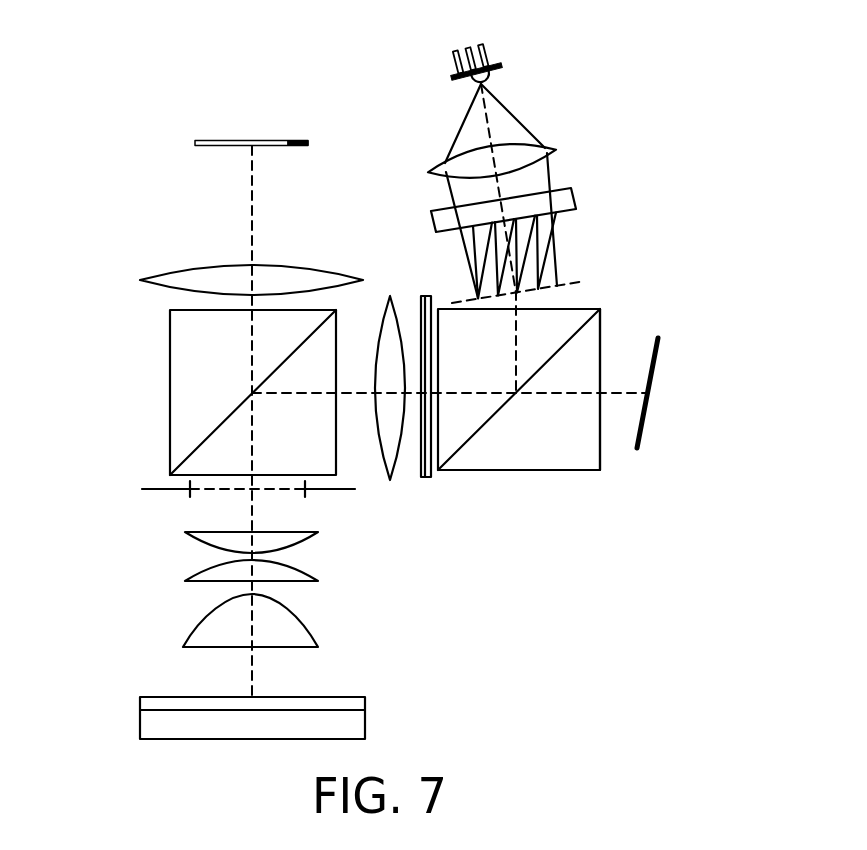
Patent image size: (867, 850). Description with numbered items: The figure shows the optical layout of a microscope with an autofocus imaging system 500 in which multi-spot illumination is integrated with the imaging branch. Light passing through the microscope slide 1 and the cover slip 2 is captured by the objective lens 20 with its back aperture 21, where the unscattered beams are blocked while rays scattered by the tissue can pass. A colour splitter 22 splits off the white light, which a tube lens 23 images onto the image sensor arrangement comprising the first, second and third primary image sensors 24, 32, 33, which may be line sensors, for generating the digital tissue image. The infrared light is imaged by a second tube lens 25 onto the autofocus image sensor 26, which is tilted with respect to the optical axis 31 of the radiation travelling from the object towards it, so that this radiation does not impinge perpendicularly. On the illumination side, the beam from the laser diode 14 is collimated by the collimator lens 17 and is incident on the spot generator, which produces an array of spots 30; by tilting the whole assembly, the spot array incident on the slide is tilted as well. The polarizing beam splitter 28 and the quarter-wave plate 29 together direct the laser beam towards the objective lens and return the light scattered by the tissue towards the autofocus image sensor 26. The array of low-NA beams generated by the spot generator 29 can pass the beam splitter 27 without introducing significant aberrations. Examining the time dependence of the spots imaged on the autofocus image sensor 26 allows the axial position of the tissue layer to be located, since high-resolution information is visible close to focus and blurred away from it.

The microscope slide 1 is at (232, 728).
The cover slip 2 is at (147, 703).
The laser diode 14 is at (498, 62).
The collimator lens 17 is at (545, 152).
The objective lens 20 is at (215, 540).
The back aperture 21 is at (153, 488).
The colour splitter 22 is at (185, 352).
The tube lens 23 is at (173, 278).
The first primary image sensor 24 is at (207, 143).
The tube lens 25 is at (388, 480).
The autofocus image sensor 26 is at (645, 433).
The beam splitter 27 is at (528, 458).
The polarizing beam splitter 28 is at (437, 474).
The quarter-wave plate 29 is at (568, 193).
The array of spots 30 is at (582, 278).
The optical axis 31 is at (588, 390).
The second primary image sensor 32 is at (206, 101).
The third primary image sensor 33 is at (206, 101).
The autofocus imaging system 500 is at (568, 642).